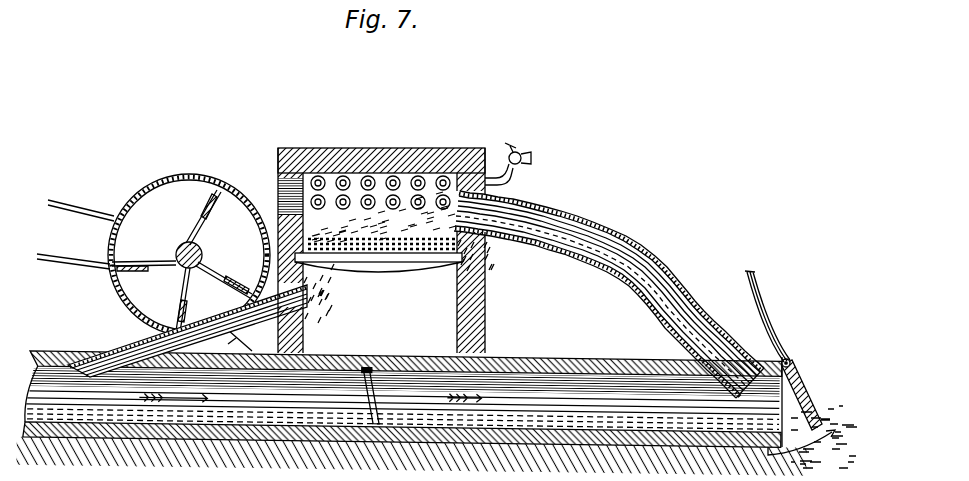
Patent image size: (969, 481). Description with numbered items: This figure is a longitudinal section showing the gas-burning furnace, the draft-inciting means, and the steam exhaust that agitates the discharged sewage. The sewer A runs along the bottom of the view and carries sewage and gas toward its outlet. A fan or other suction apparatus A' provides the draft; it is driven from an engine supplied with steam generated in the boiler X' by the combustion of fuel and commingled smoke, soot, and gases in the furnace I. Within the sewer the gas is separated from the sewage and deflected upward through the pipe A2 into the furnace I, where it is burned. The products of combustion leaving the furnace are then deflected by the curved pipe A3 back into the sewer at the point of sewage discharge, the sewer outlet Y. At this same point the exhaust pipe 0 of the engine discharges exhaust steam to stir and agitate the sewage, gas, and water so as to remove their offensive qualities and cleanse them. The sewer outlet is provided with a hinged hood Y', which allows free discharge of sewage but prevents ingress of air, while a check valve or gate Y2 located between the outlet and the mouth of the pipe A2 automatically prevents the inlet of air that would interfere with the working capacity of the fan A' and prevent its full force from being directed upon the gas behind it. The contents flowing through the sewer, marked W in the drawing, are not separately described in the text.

The boiler X' is at (404, 239).
The fan or other suction apparatus A' is at (153, 255).
The pipe A2 is at (128, 345).
The curved pipe A3 is at (609, 294).
The sewer A is at (412, 413).
The furnace I is at (378, 274).
The check valve or gate Y2 is at (369, 369).
The material flow in conduit W is at (403, 399).
The sewer-outlet Y is at (809, 412).
The hinged hood Y' is at (807, 394).
The exhaust-pipe 0 is at (779, 309).